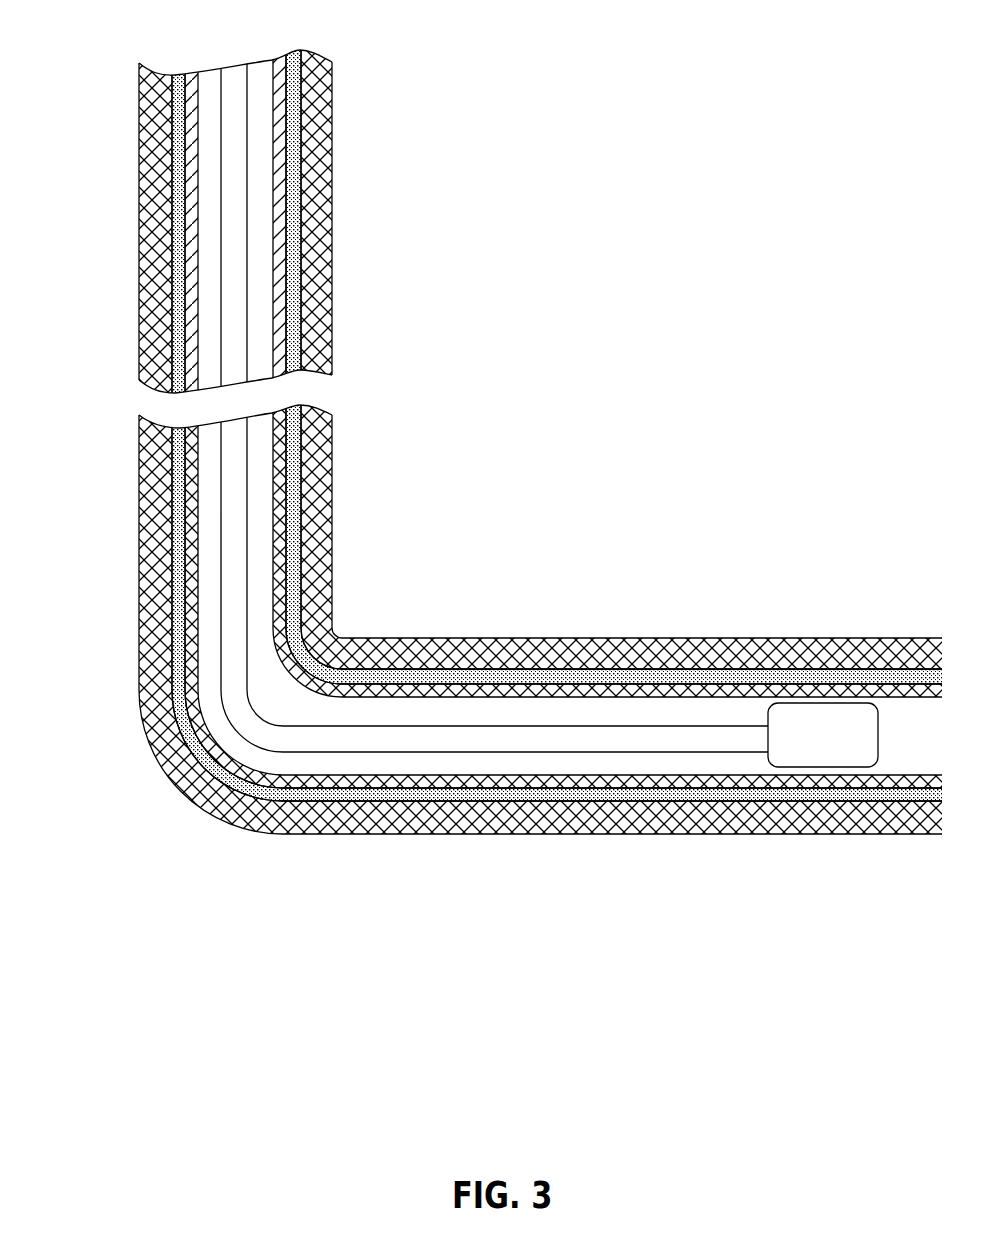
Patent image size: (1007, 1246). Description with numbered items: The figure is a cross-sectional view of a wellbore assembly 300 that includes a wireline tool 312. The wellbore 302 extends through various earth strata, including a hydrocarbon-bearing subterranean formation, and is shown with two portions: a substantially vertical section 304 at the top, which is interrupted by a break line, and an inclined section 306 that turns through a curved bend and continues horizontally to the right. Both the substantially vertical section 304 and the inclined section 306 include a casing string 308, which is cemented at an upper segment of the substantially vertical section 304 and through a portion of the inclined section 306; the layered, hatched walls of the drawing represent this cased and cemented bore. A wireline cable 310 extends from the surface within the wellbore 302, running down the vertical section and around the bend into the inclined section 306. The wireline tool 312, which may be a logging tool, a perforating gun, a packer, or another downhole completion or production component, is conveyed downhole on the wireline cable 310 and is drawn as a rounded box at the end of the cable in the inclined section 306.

The wellbore assembly 300 is at (110, 105).
The wellbore 302 is at (283, 573).
The substantially vertical section 304 is at (288, 480).
The inclined section 306 is at (623, 688).
The casing string 308 is at (318, 190).
The wireline cable 310 is at (255, 630).
The wireline tool 312 is at (822, 768).